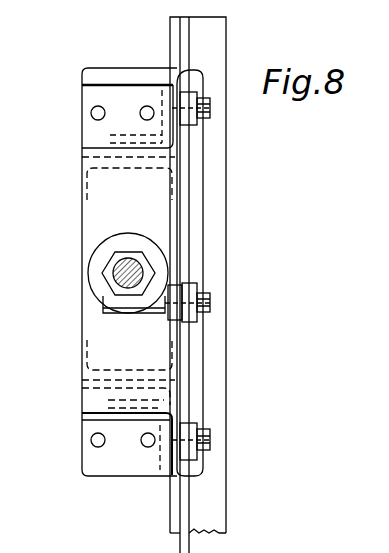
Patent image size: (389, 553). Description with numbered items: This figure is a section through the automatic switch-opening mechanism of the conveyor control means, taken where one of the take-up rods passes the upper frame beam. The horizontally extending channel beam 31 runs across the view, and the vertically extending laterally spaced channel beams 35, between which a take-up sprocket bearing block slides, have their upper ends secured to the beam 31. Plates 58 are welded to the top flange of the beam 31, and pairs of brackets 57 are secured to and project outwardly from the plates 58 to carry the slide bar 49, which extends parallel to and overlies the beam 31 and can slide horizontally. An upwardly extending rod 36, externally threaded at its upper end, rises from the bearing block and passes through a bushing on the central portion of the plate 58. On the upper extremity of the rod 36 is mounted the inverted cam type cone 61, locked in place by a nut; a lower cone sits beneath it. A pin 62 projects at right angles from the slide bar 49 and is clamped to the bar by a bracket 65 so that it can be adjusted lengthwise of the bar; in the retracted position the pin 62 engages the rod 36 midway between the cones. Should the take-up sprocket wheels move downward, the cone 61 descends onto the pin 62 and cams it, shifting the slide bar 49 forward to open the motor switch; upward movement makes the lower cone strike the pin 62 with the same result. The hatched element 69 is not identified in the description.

The horizontally extending channel beam 31 is at (215, 411).
The vertically extending laterally spaced channel beams 35 is at (88, 357).
The upwardly extending rods 36 is at (153, 264).
The slide bar 49 is at (190, 374).
The brackets 57 is at (135, 420).
The plates 58 is at (104, 272).
The inverted cam type cones 61 is at (152, 246).
The pins 62 is at (131, 313).
The brackets 65 is at (186, 324).
The bolt shank 69 is at (138, 275).